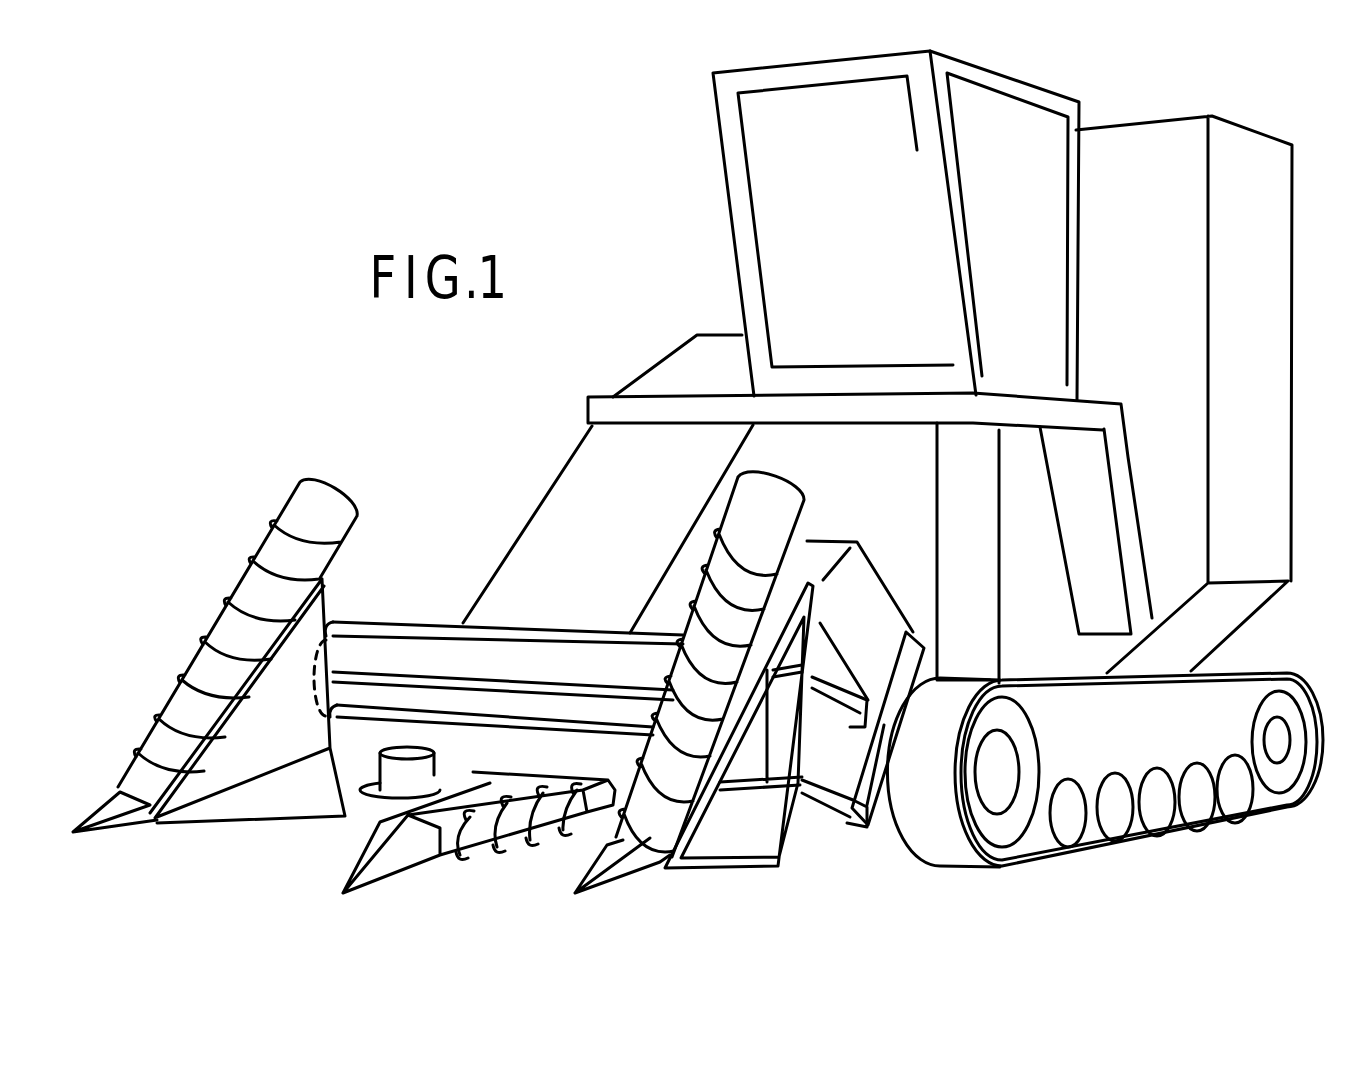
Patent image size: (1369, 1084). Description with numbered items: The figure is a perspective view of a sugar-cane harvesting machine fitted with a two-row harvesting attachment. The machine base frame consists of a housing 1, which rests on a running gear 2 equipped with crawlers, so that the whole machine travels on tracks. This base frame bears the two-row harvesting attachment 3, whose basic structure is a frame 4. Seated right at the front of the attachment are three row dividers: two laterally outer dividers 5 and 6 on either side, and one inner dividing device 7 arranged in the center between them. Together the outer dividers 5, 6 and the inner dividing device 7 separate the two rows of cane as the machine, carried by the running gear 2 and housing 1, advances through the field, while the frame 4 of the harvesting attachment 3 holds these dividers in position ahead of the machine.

The housing 1 is at (692, 303).
The running gear 2 is at (1034, 845).
The two-row harvesting attachment 3 is at (420, 545).
The frame 4 is at (872, 815).
The laterally outer divider 5 is at (652, 835).
The laterally outer divider 6 is at (210, 662).
The inner dividing device 7 is at (457, 840).